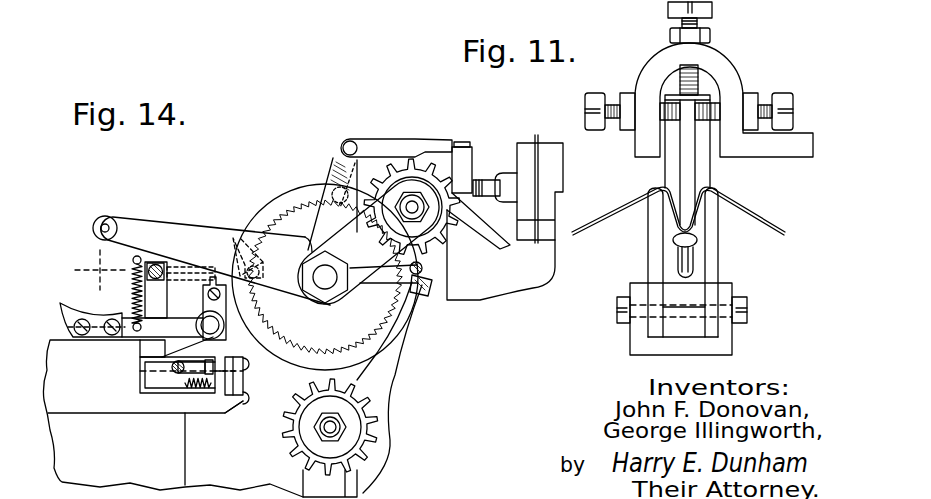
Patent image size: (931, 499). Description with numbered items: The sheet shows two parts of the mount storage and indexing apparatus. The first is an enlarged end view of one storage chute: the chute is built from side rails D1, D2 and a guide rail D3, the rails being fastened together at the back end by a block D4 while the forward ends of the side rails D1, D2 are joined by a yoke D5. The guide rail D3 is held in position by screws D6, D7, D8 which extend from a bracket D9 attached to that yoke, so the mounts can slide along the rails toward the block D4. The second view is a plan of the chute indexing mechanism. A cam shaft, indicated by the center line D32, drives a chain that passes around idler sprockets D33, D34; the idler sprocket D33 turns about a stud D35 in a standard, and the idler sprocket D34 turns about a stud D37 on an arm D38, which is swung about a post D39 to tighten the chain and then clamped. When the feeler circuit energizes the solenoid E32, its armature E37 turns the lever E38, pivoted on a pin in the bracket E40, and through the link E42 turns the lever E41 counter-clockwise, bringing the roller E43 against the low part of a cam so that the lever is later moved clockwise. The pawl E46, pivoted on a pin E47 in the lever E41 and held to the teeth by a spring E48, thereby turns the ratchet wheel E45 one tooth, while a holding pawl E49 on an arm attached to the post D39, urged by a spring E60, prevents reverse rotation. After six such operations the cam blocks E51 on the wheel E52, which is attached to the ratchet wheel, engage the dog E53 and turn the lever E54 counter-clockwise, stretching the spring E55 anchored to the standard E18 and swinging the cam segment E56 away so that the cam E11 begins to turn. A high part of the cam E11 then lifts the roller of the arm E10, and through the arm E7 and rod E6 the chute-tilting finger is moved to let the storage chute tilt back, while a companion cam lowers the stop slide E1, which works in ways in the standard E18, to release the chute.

In FIG. 14, the stop slide E1 is at (245, 385).
In FIG. 14, the rod E6 is at (171, 367).
In FIG. 14, the arm E7 is at (186, 363).
In FIG. 14, the arm E10 is at (170, 262).
In FIG. 14, the cam E11 is at (195, 394).
In FIG. 14, the standard E18 is at (229, 416).
In FIG. 14, the solenoid E32 is at (534, 150).
In FIG. 14, the armature E37 is at (512, 176).
In FIG. 14, the lever E38 is at (467, 158).
In FIG. 14, the bracket E40 is at (496, 243).
In FIG. 14, the lever E41 is at (205, 236).
In FIG. 14, the link E42 is at (374, 138).
In FIG. 14, the roller E43 is at (112, 211).
In FIG. 14, the ratchet wheel E45 is at (390, 313).
In FIG. 14, the pawl E46 is at (334, 194).
In FIG. 14, the pin E47 is at (410, 206).
In FIG. 14, the spring E48 is at (336, 176).
In FIG. 14, the pawl E49 is at (395, 298).
In FIG. 14, the cam blocks E51 is at (235, 248).
In FIG. 14, the wheel E52 is at (372, 352).
In FIG. 14, the dog E53 is at (213, 280).
In FIG. 14, the lever E54 is at (223, 322).
In FIG. 14, the spring E55 is at (133, 297).
In FIG. 14, the cam segment E56 is at (65, 308).
In FIG. 14, the spring E60 is at (430, 280).
In FIG. 11, the side rail D1 is at (648, 265).
In FIG. 11, the side rail D2 is at (718, 260).
In FIG. 11, the guide rail D3 is at (700, 174).
In FIG. 11, the block D4 is at (668, 174).
In FIG. 11, the yoke D5 is at (631, 343).
In FIG. 11, the screw D6 is at (598, 93).
In FIG. 11, the screw D7 is at (712, 14).
In FIG. 11, the screw D8 is at (793, 101).
In FIG. 11, the bracket D9 is at (795, 160).
In FIG. 14, the center line D32 is at (98, 268).
In FIG. 14, the idler sprocket D33 is at (377, 422).
In FIG. 14, the idler sprocket D34 is at (478, 221).
In FIG. 14, the stud D35 is at (325, 432).
In FIG. 14, the stud D37 is at (405, 213).
In FIG. 14, the arm D38 is at (325, 277).
In FIG. 14, the post D39 is at (333, 284).